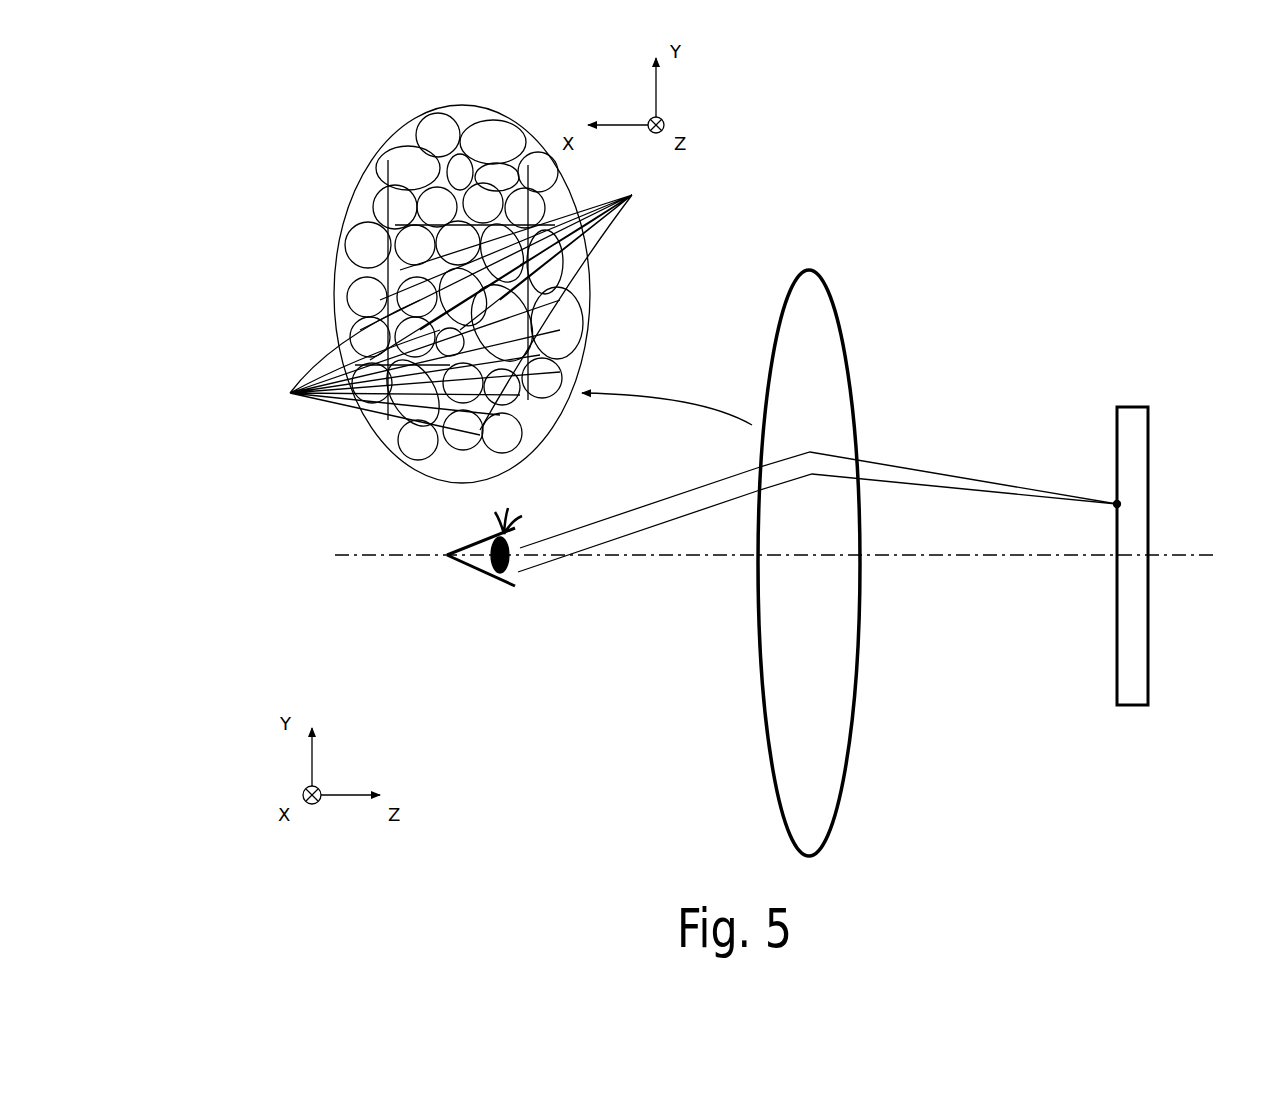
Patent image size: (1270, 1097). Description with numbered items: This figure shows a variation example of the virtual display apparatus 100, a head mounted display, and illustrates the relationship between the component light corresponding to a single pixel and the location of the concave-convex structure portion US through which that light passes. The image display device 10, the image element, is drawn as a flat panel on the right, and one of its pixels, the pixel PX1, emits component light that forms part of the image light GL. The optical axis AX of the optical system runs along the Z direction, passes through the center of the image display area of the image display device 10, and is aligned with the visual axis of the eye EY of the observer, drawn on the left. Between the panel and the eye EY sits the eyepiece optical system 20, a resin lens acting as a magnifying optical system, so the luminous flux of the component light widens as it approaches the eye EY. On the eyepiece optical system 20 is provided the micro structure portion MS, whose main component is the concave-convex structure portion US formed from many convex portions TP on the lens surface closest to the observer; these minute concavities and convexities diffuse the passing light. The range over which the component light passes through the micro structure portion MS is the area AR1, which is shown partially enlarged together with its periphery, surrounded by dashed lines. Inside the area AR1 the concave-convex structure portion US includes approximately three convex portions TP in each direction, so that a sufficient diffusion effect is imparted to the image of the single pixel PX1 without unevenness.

The virtual display apparatus 100 is at (1044, 221).
The image display device 10 is at (1128, 392).
The eyepiece optical system 20 is at (816, 306).
The pixel PX1 is at (1114, 501).
The optical axis AX is at (1178, 548).
The image light GL is at (672, 492).
The eye EY is at (466, 569).
The area AR1 is at (752, 472).
The micro structure portion MS is at (358, 131).
The concave-convex structure portion US is at (362, 163).
The convex portion TP is at (456, 305).